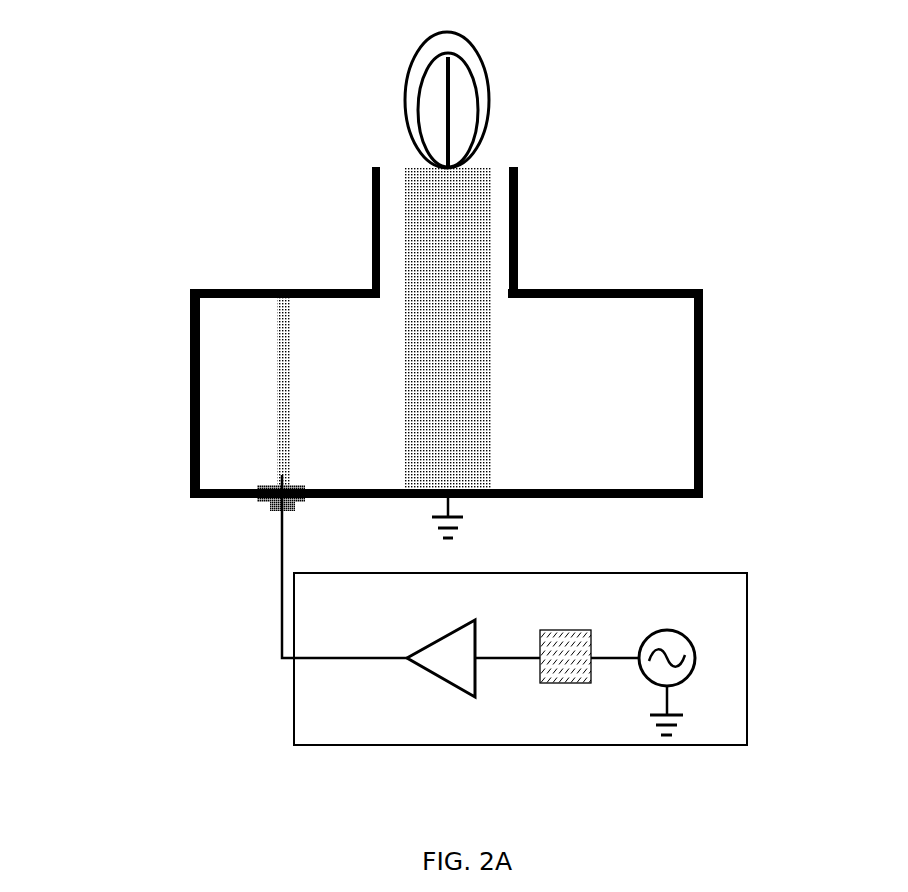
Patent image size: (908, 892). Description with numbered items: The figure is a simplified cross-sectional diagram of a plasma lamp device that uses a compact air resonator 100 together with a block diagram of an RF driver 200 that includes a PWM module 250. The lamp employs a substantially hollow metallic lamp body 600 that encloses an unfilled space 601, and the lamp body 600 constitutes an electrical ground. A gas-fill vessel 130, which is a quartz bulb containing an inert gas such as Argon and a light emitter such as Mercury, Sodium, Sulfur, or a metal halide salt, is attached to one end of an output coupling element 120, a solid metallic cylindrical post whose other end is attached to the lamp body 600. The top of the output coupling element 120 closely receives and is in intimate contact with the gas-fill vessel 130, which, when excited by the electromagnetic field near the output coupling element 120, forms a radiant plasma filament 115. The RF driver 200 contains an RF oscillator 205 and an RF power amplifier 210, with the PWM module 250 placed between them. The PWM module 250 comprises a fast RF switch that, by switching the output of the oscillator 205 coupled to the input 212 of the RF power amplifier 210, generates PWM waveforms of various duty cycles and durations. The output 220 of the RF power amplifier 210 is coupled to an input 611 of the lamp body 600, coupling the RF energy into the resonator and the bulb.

The compact air resonator 100 is at (645, 136).
The radiant plasma filament 115 is at (450, 97).
The output coupling element 120 is at (405, 228).
The gas-fill vessel 130 is at (405, 108).
The RF driver 200 is at (747, 617).
The RF oscillator 205 is at (693, 673).
The RF power amplifier 210 is at (447, 684).
The input of the RF power amplifier 212 is at (477, 660).
The output of the RF power amplifier 220 is at (285, 663).
The PWM module 250 is at (558, 627).
The metallic lamp body 600 is at (703, 308).
The unfilled space 601 is at (630, 385).
The input of the lamp body 611 is at (278, 508).